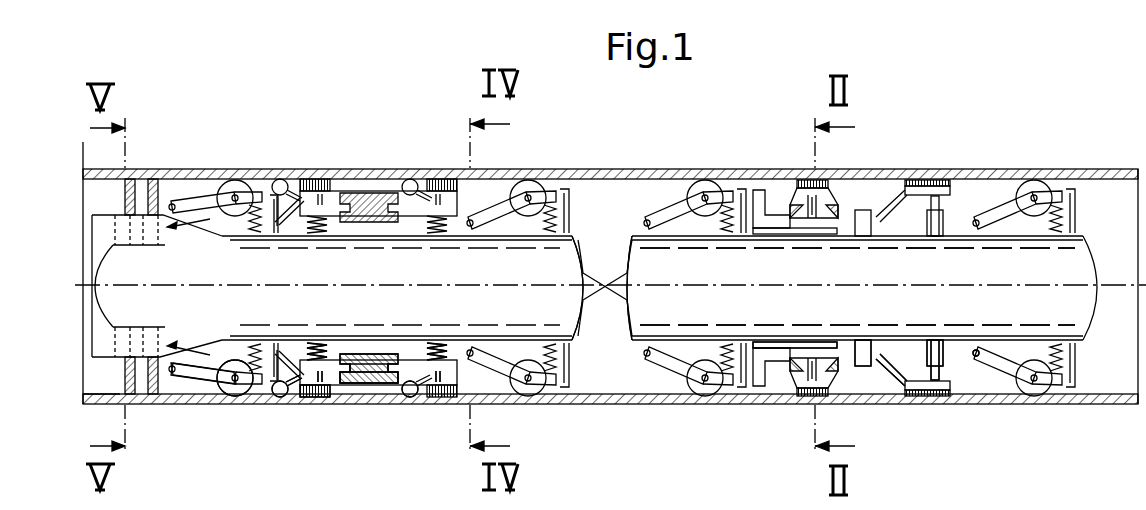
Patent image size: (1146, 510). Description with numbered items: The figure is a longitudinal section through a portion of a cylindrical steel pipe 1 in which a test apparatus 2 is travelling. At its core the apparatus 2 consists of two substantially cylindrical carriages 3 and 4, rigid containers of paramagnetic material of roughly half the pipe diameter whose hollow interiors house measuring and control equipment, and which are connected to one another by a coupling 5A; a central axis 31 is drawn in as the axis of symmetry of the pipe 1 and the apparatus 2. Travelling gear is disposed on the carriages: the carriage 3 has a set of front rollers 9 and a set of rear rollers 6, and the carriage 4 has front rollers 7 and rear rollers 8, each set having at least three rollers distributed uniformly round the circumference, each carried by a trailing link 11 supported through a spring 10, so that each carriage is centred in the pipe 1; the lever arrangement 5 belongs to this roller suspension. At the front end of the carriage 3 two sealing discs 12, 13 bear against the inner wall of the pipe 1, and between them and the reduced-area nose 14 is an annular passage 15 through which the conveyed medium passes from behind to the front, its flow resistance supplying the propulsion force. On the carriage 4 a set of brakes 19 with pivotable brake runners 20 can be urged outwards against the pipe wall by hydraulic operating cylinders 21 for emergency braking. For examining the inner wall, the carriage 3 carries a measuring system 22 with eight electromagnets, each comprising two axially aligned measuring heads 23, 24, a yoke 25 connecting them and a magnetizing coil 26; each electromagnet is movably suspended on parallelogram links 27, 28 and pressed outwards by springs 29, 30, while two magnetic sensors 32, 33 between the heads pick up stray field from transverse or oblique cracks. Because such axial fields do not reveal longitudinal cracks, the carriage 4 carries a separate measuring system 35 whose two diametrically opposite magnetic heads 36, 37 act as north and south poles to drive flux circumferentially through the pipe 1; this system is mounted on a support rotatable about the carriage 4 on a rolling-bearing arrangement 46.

The cylindrical steel pipe 1 is at (610, 267).
The test apparatus 2 is at (590, 237).
The carriage 3 is at (402, 288).
The carriage 4 is at (862, 288).
The lever arm 5 is at (203, 409).
The coupling 5A is at (605, 282).
The rear rollers 6 is at (518, 313).
The front rollers 7 is at (695, 317).
The rear rollers 8 is at (1024, 317).
The front rollers 9 is at (217, 311).
The spring 10 is at (286, 415).
The trailing link 11 is at (240, 408).
The sealing disc 12 is at (148, 253).
The sealing disc 13 is at (184, 253).
The nose 14 is at (157, 286).
The annular passage 15 is at (83, 420).
The brakes 19 is at (939, 393).
The brake runners 20 is at (957, 393).
The hydraulic operating cylinders 21 is at (996, 398).
The measuring system 22 is at (335, 427).
The measuring head 23 is at (327, 405).
The measuring head 24 is at (444, 408).
The yoke 25 is at (364, 288).
The magnetizing coil 26 is at (369, 339).
The parallelogram link 27 is at (311, 422).
The parallelogram link 28 is at (453, 405).
The spring 29 is at (329, 328).
The spring 30 is at (454, 331).
The central axis 31 is at (857, 286).
The magnetic sensor 32 is at (372, 405).
The magnetic sensor 33 is at (386, 422).
The measuring system for longitudinal cracks 35 is at (851, 392).
The magnetic head 36 is at (851, 266).
The magnetic head 37 is at (899, 399).
The rolling-bearing arrangement 46 is at (795, 323).